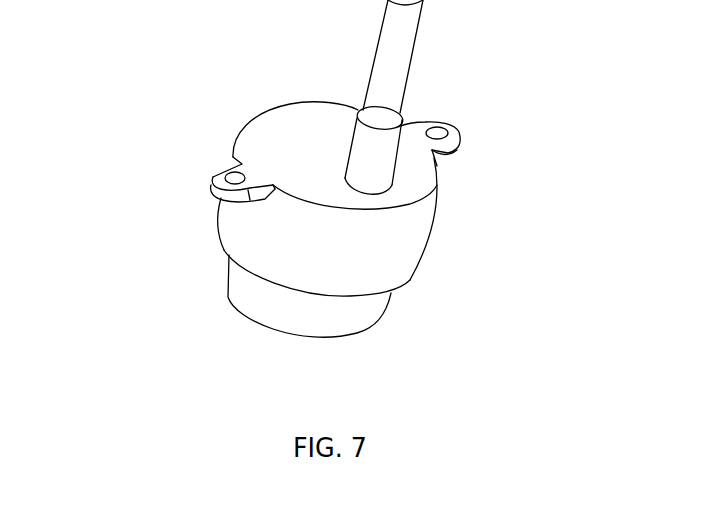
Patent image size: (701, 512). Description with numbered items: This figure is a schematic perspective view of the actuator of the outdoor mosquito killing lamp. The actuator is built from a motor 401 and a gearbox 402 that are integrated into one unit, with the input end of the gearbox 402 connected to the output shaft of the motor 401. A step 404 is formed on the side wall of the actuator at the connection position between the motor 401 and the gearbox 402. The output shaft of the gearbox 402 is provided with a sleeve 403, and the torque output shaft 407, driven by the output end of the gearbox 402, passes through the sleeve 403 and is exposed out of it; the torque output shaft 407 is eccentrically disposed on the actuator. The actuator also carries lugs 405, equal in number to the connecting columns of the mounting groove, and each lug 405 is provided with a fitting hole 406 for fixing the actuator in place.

The motor 401 is at (385, 316).
The gearbox 402 is at (408, 240).
The sleeve 403 is at (390, 146).
The step 404 is at (220, 247).
The lug 405 is at (227, 172).
The fitting hole 406 is at (227, 167).
The torque output shaft 407 is at (400, 65).